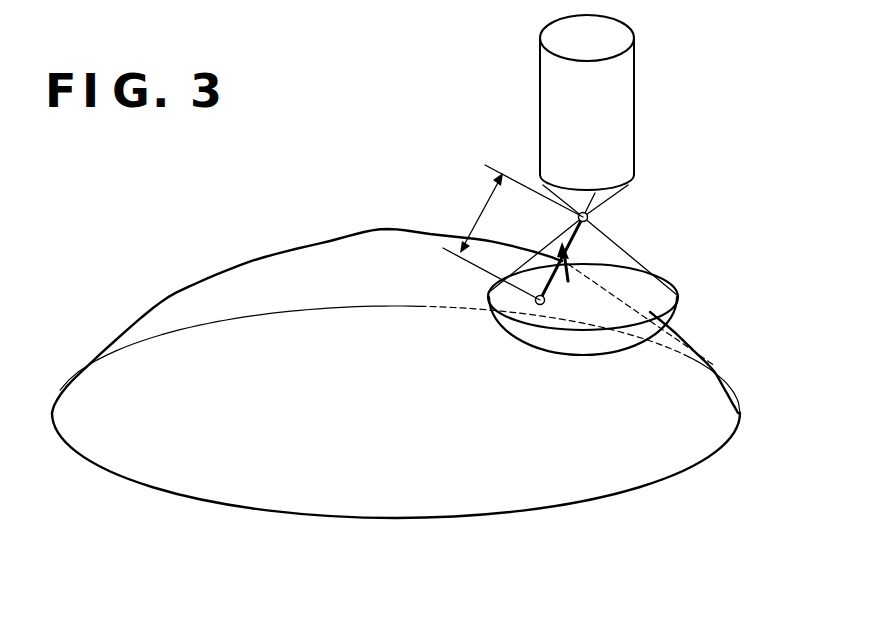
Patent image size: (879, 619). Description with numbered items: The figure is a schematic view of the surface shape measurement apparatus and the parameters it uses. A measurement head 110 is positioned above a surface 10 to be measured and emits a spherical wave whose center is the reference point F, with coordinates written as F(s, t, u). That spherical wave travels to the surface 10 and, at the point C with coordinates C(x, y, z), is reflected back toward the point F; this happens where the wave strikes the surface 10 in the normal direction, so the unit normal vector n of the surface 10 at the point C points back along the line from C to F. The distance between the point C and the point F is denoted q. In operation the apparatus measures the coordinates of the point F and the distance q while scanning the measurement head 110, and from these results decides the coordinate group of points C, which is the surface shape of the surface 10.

The surface to be measured 10 is at (155, 308).
The measurement head 110 is at (617, 88).
The reference point F(s, t, u) F is at (600, 214).
The reflection point C(x, y, z) C is at (540, 312).
The unit normal vector n is at (580, 257).
The distance q is at (513, 232).